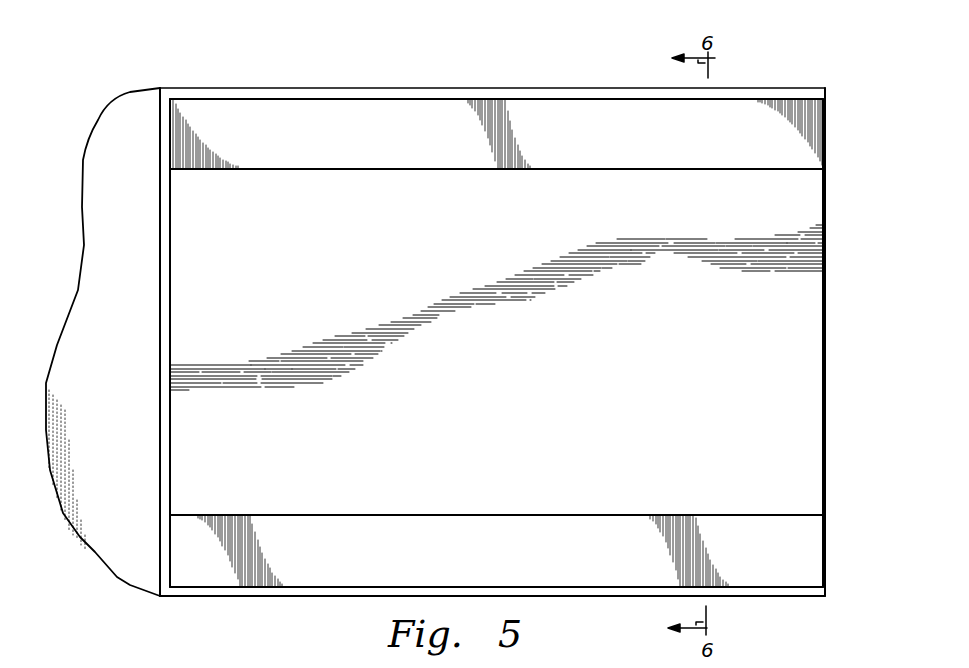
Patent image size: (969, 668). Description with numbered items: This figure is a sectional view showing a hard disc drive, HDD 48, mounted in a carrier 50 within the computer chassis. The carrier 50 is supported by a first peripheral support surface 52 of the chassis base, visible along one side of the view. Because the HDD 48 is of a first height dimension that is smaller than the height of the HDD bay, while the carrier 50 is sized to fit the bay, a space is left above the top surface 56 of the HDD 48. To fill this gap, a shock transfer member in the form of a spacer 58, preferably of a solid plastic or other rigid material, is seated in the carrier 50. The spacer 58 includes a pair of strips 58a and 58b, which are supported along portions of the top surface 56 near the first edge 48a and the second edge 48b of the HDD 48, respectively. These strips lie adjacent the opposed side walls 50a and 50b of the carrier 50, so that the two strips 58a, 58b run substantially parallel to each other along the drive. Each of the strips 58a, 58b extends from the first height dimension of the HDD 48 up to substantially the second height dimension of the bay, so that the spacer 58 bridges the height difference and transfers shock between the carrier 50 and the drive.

The HDD 48 is at (808, 345).
The first edge 48a is at (215, 588).
The second edge 48b is at (330, 97).
The carrier 50 is at (763, 88).
The side wall 50a is at (319, 583).
The side wall 50b is at (417, 97).
The first peripheral support surface 52 is at (90, 290).
The top surface 56 is at (800, 424).
The spacer 58 is at (237, 82).
The strip 58a is at (768, 568).
The strip 58b is at (558, 115).